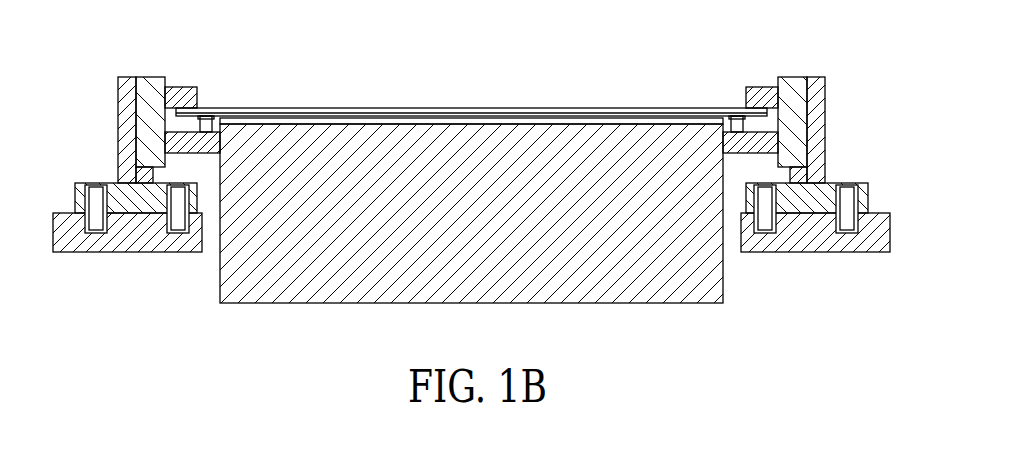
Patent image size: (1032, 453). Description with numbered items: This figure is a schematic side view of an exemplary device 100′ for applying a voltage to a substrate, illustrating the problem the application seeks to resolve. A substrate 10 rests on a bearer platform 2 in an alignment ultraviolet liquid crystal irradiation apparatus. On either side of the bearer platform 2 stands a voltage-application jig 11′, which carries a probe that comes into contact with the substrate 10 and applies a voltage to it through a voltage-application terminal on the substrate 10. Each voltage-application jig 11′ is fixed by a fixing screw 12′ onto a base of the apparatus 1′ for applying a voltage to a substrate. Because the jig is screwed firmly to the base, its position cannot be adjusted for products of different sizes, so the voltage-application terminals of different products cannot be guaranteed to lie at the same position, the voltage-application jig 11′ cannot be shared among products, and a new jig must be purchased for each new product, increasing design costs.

The device for applying a voltage to a substrate 100′ is at (86, 50).
The apparatus for applying a voltage to a substrate 1′ is at (48, 88).
The voltage-application jig 11′ is at (120, 102).
The fixing screw 12′ is at (93, 183).
The substrate 10 is at (683, 108).
The bearer platform 2 is at (723, 272).